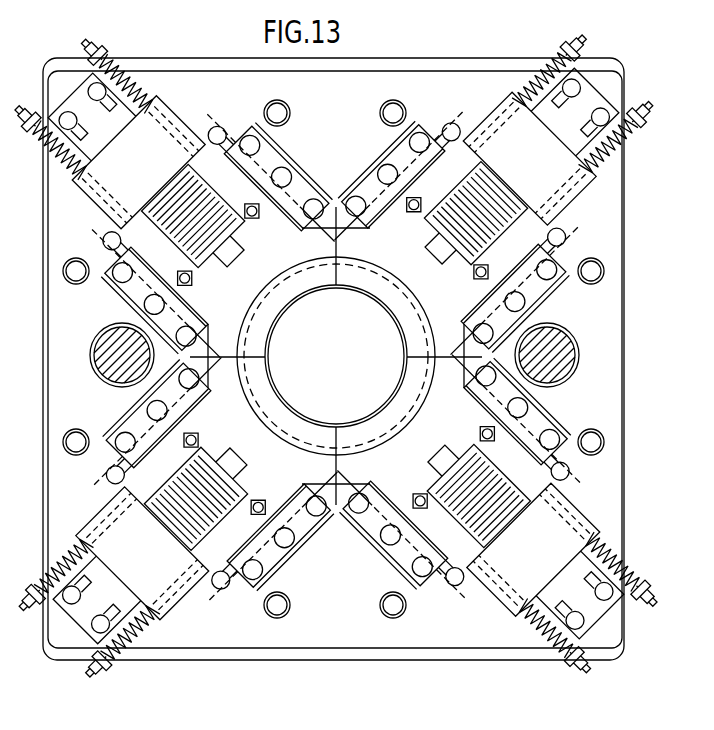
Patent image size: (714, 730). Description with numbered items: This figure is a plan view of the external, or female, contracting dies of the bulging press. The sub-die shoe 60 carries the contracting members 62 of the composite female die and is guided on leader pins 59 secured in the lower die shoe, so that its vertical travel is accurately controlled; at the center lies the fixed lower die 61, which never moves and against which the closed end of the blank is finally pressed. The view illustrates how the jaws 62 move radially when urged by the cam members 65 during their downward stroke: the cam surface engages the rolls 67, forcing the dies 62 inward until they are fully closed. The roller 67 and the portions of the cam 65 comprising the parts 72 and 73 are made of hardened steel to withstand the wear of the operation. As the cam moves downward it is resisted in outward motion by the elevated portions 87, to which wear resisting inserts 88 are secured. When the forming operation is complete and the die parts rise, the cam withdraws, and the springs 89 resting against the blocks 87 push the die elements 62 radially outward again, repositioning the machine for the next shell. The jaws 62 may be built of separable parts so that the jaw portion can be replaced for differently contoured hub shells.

The leader pins 59 is at (90, 354).
The sub-die shoe 60 is at (612, 227).
The lower die 61 is at (346, 352).
The contracting members 62 is at (272, 280).
The cams 65 is at (272, 158).
The rolls 67 is at (196, 284).
The cam part 72 is at (177, 170).
The cam part 73 is at (236, 230).
The elevated portions 87 is at (120, 217).
The wear resisting inserts 88 is at (144, 194).
The springs 89 is at (530, 72).